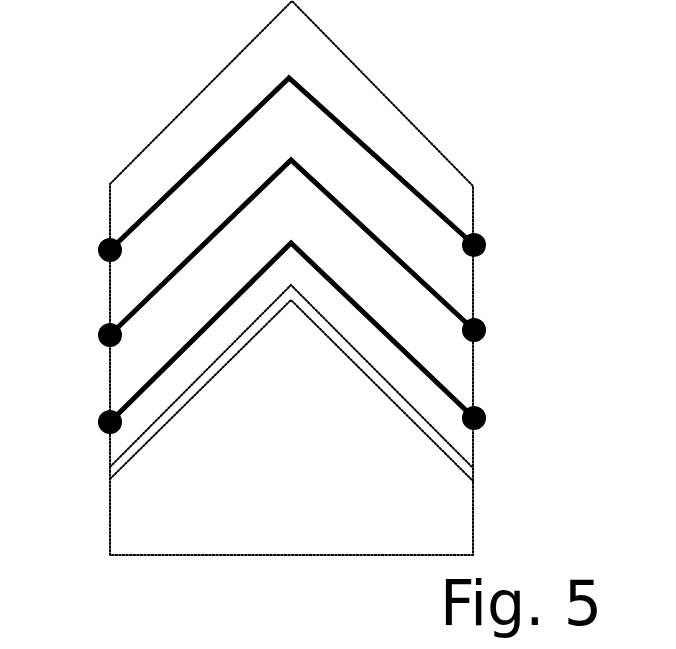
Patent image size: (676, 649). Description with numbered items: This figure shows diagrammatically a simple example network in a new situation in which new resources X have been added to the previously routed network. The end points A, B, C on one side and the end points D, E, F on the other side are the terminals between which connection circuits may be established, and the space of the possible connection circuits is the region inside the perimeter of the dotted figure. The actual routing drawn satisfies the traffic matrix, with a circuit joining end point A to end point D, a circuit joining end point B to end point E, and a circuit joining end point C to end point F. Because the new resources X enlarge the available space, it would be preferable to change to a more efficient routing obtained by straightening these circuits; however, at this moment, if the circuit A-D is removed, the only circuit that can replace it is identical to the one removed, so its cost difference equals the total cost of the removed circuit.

The end point A is at (82, 251).
The end point B is at (82, 339).
The end point C is at (82, 427).
The end point D is at (495, 247).
The end point E is at (494, 337).
The end point F is at (494, 422).
The new resources X is at (291, 394).